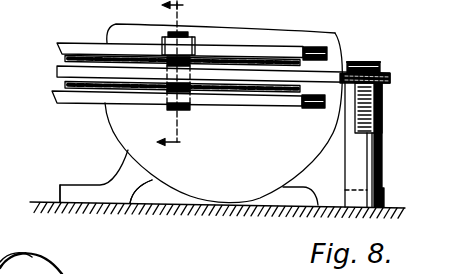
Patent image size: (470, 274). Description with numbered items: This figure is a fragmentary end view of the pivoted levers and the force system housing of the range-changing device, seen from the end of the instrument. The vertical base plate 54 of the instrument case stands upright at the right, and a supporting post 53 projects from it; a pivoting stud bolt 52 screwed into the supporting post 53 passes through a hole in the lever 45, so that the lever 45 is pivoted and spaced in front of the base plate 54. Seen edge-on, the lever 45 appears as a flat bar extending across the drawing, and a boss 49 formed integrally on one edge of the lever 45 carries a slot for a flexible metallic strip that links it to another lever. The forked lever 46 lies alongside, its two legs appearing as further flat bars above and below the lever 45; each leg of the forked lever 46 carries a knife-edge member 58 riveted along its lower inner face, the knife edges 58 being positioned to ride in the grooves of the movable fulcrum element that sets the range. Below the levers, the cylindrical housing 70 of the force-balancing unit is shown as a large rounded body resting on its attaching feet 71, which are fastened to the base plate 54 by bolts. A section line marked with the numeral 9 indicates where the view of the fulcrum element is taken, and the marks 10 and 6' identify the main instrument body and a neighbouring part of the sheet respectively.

The body 10 is at (241, 178).
The cylindrical housing 70 is at (189, 177).
The attaching feet 71 is at (59, 192).
The vertical base plate 54 is at (128, 206).
The knife-edge member 58 is at (80, 54).
The lever 45 is at (57, 72).
The forked lever 46 is at (297, 108).
The boss 49 is at (229, 72).
The section line 9- 9 is at (166, 79).
The supporting post 53 is at (372, 150).
The pivoting stud bolt 52 is at (366, 62).
The element 6' is at (9, 14).